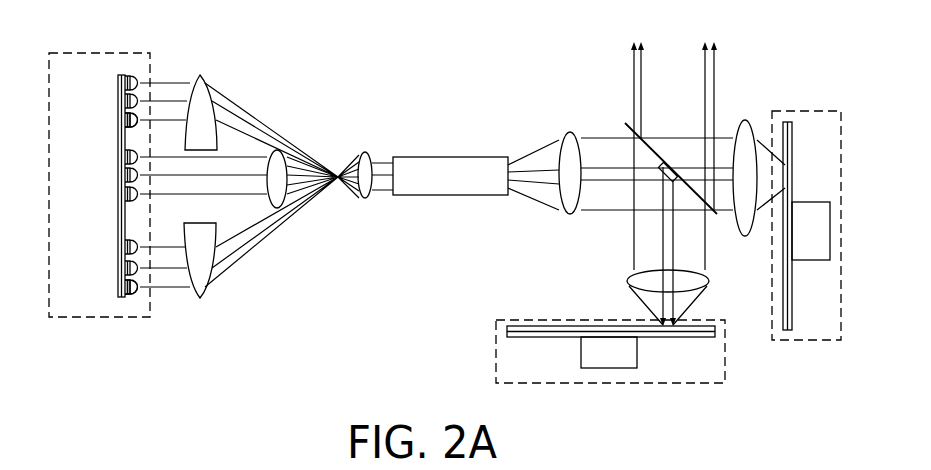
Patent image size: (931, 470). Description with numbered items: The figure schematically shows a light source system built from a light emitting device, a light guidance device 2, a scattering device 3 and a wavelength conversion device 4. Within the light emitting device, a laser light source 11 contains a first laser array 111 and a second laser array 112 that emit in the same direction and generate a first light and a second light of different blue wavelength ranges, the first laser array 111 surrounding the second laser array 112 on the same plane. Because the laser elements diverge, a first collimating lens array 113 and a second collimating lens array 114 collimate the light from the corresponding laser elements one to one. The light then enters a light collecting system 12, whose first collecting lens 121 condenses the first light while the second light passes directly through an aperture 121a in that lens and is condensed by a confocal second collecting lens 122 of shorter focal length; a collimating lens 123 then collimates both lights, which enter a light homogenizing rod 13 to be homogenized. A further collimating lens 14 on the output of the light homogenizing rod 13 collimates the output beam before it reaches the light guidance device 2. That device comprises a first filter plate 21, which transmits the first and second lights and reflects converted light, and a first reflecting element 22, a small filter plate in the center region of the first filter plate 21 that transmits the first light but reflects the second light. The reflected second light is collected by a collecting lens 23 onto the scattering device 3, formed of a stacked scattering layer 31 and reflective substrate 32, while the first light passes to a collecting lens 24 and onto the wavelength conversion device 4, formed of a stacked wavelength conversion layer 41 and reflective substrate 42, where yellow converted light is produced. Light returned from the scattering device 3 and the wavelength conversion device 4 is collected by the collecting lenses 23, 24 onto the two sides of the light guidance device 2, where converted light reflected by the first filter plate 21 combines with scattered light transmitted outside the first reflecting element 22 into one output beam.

The laser light source 11 is at (80, 317).
The first laser array 111 is at (122, 120).
The second laser array 112 is at (125, 193).
The first collimating lens array 113 is at (140, 80).
The second collimating lens array 114 is at (128, 158).
The light collecting system 12 is at (284, 293).
The first collecting lens 121 is at (203, 297).
The aperture 121a is at (200, 170).
The second collecting lens 122 is at (277, 208).
The collimating lens 123 is at (364, 198).
The light homogenizing rod 13 is at (415, 185).
The collimating lens 14 is at (560, 140).
The light guidance device 2 is at (653, 88).
The first filter plate 21 is at (633, 136).
The first reflecting element 22 is at (667, 162).
The collecting lens 23 is at (630, 288).
The collecting lens 24 is at (745, 128).
The scattering device 3 is at (525, 383).
The scattering layer 31 is at (507, 330).
The reflective substrate 32 is at (510, 334).
The wavelength conversion device 4 is at (805, 340).
The wavelength conversion layer 41 is at (784, 329).
The reflective substrate 42 is at (793, 329).